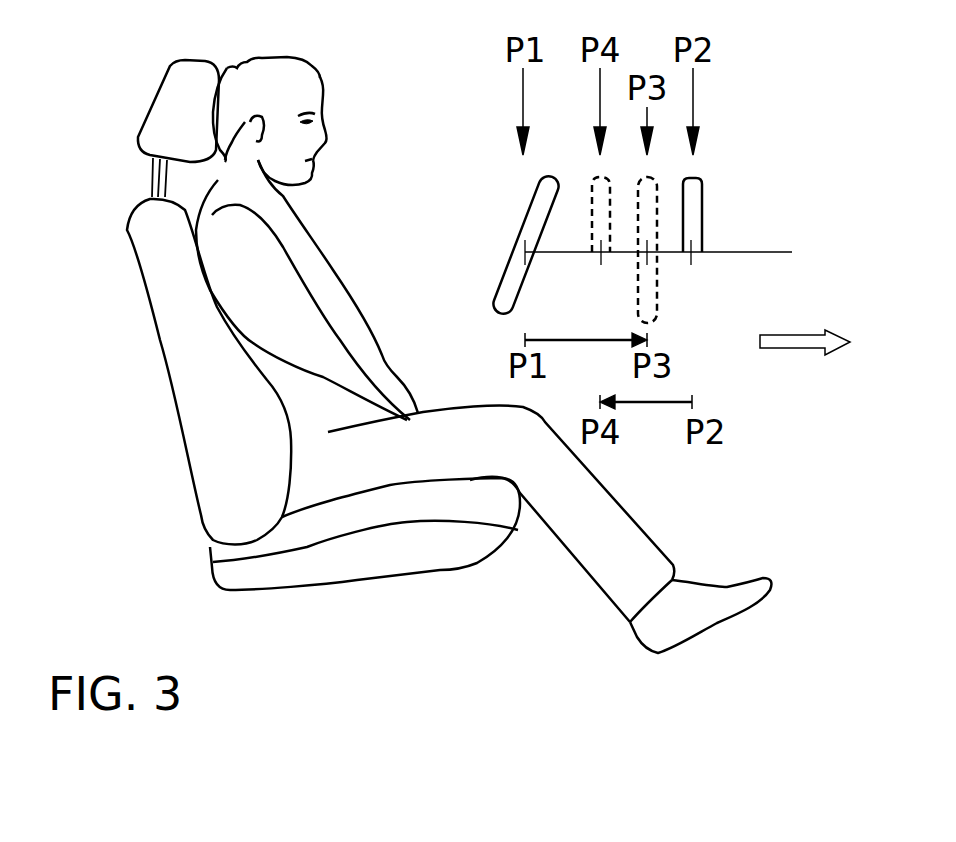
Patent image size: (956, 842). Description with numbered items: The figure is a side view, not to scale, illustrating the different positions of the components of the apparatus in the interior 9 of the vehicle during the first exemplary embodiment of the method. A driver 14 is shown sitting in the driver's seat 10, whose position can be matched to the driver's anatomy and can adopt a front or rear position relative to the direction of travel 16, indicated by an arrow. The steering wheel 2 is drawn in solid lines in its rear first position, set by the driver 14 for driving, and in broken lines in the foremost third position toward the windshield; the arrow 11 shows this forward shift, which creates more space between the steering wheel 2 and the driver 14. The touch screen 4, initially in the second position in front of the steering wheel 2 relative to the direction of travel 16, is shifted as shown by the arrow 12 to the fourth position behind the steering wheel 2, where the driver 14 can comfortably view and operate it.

The steering wheel 2 is at (528, 217).
The touch screen 4 is at (590, 192).
The interior 9 is at (393, 255).
The driver's seat 10 is at (228, 403).
The arrow 11 is at (572, 340).
The arrow 12 is at (652, 402).
The driver 14 is at (252, 283).
The direction of travel 16 is at (808, 342).